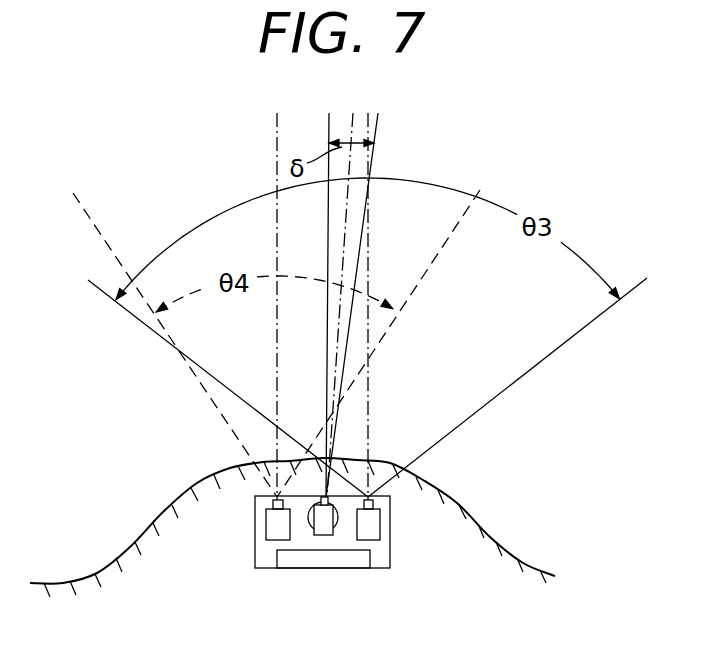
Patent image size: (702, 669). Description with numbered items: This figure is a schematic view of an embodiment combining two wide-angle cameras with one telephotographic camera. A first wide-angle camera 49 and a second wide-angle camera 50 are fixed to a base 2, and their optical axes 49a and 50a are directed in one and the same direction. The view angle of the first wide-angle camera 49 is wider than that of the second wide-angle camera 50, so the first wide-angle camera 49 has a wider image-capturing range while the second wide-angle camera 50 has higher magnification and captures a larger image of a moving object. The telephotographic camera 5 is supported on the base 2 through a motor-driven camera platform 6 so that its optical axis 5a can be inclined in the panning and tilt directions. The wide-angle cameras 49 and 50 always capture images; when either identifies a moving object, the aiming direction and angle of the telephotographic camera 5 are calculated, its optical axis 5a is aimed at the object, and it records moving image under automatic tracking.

The base 2 is at (255, 556).
The telephotographic camera 5 is at (323, 533).
The motor-driven camera platform 6 is at (338, 523).
The first wide-angle camera 49 is at (380, 523).
The second wide-angle camera 50 is at (266, 522).
The optical axis 5a is at (353, 125).
The optical axis 49a is at (368, 403).
The optical axis 50a is at (277, 328).